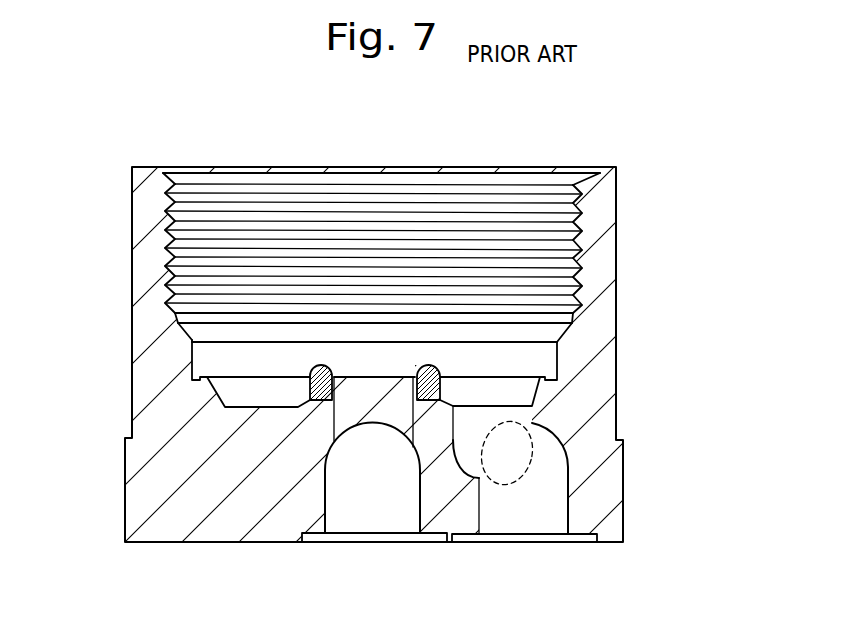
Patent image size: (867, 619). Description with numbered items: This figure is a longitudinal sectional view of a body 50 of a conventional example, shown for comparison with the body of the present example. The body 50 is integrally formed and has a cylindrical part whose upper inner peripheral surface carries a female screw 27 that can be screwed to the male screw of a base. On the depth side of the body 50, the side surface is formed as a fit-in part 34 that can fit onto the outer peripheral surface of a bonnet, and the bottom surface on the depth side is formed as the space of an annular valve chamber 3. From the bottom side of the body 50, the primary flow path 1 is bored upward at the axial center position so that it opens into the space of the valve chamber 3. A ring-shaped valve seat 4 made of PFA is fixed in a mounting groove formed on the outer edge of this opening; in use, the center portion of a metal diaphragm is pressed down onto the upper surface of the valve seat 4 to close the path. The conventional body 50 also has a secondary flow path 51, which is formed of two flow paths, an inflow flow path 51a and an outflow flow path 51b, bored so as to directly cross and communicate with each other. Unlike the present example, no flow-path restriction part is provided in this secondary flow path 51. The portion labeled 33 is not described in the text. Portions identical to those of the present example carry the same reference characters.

The body 50 is at (617, 252).
The female screw 27 is at (177, 221).
The fit-in part 34 is at (193, 353).
The valve chamber 3 is at (247, 400).
The valve seat 4 is at (321, 401).
The primary flow path 1 is at (327, 505).
The inner wall portion 33 is at (532, 420).
The secondary flow path 51 is at (572, 455).
The inflow flow path 51a is at (473, 478).
The outflow flow path 51b is at (567, 488).